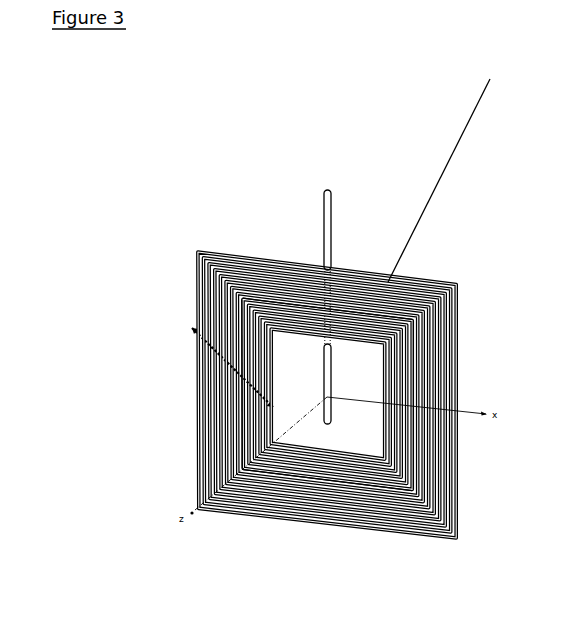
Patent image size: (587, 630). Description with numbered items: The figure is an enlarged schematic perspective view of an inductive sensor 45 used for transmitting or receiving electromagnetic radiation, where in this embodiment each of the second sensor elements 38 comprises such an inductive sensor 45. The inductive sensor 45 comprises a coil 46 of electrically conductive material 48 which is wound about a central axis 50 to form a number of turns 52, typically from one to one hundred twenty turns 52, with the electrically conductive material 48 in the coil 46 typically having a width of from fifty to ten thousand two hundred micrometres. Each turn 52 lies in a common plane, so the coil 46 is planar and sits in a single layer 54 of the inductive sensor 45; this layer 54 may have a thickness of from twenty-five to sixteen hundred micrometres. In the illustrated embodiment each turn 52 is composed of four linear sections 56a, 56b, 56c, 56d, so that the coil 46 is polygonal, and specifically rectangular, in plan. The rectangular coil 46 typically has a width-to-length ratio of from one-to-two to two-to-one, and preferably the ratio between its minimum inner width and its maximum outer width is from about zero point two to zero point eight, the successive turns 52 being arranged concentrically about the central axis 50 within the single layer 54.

The second sensor element 38 is at (281, 292).
The inductive sensor 45 is at (211, 233).
The coil 46 is at (247, 285).
The electrically conductive material 48 is at (245, 250).
The central axis 50 is at (308, 415).
The turn 52 is at (293, 143).
The single layer 54 is at (353, 272).
The linear section 56a is at (310, 318).
The linear section 56b is at (425, 455).
The linear section 56c is at (337, 478).
The linear section 56d is at (210, 393).